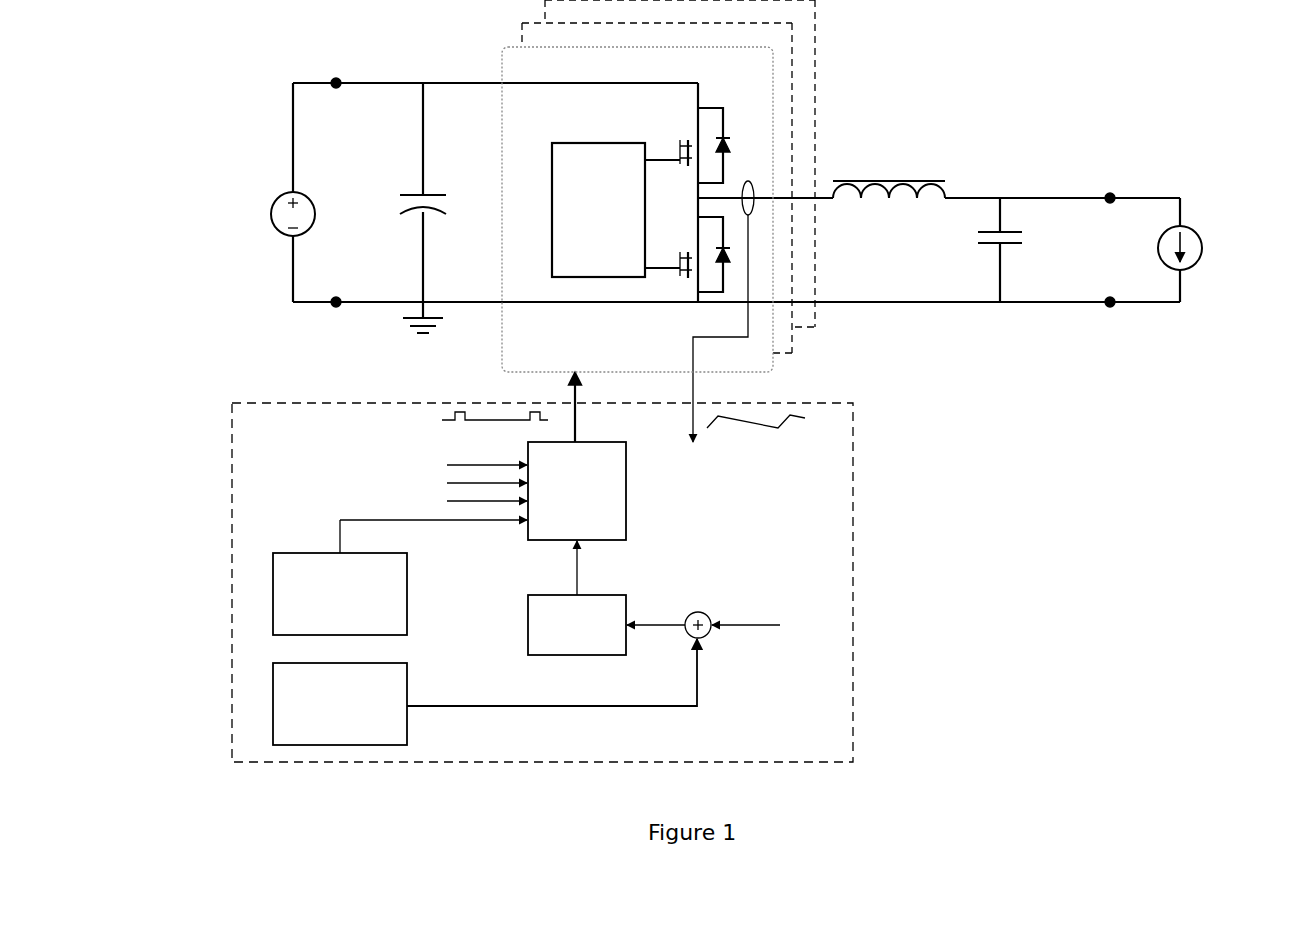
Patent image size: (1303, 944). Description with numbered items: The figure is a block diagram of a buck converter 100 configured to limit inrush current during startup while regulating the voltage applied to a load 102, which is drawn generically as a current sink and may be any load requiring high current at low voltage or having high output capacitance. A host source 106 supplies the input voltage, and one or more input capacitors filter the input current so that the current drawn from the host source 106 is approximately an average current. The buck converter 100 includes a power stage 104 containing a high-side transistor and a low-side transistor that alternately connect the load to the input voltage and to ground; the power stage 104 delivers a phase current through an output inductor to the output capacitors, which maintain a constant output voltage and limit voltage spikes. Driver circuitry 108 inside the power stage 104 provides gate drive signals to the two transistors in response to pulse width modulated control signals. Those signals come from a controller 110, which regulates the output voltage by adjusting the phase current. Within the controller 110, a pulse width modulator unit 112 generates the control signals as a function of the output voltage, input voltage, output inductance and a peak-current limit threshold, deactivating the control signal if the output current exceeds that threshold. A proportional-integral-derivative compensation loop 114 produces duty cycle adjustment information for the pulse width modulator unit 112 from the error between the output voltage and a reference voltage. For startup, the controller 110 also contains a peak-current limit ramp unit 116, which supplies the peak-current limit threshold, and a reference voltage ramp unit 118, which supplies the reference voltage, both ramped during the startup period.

The buck converter 100 is at (147, 133).
The load 102 is at (1196, 232).
The power stage 104 is at (816, 17).
The host source 106 is at (271, 215).
The driver circuitry 108 is at (616, 210).
The controller 110 is at (362, 435).
The pulse width modulator unit 112 is at (588, 525).
The PID compensation loop 114 is at (528, 625).
The peak-current limit ramp unit 116 is at (352, 632).
The reference voltage ramp unit 118 is at (352, 727).